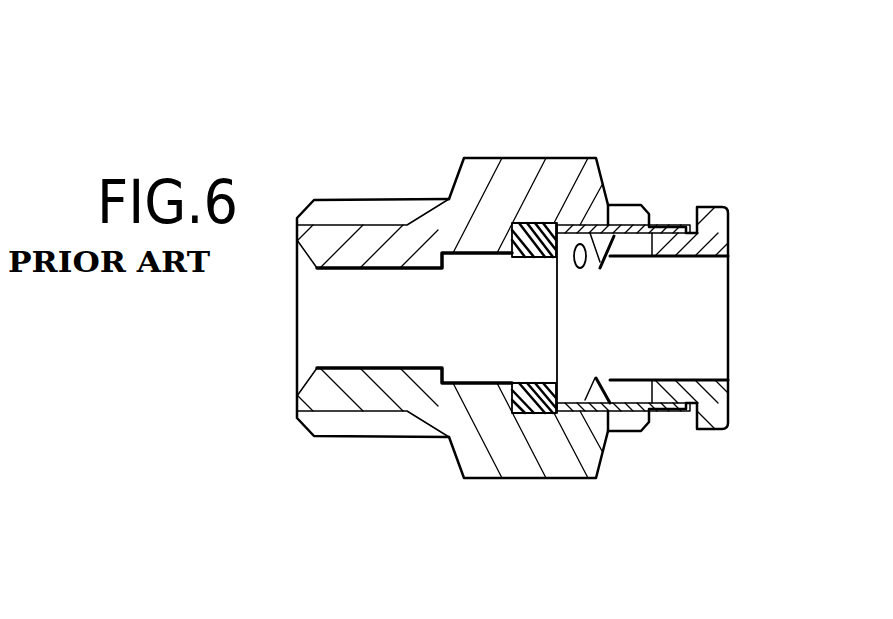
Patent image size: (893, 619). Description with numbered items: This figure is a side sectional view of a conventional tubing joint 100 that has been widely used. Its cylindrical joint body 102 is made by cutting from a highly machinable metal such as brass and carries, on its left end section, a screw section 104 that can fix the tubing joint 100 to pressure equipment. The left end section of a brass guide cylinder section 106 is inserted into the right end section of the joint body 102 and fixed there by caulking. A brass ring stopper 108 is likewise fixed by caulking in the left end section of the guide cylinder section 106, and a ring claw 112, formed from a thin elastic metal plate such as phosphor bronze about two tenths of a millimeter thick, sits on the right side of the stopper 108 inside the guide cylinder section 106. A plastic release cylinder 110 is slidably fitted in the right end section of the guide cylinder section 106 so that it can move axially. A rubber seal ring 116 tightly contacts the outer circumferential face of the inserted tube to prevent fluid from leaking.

The tubing joint 100 is at (378, 106).
The joint body 102 is at (518, 158).
The screw section 104 is at (330, 200).
The guide cylinder section 106 is at (676, 225).
The ring stopper 108 is at (592, 222).
The release cylinder 110 is at (723, 207).
The ring claw 112 is at (612, 371).
The seal ring 116 is at (540, 384).